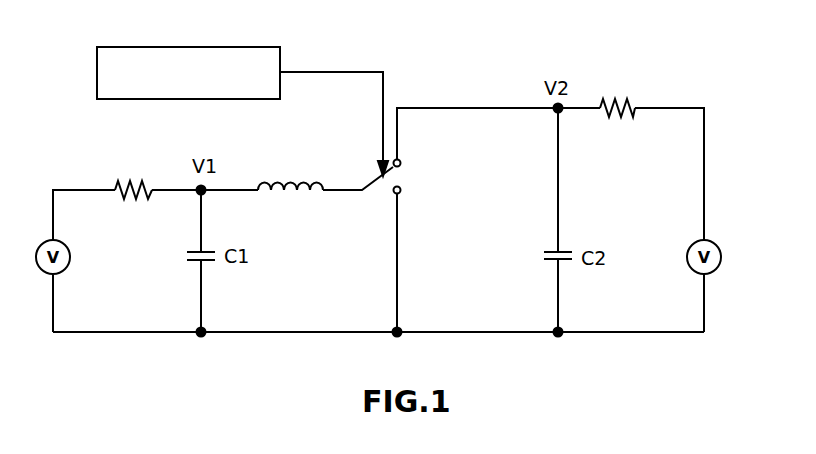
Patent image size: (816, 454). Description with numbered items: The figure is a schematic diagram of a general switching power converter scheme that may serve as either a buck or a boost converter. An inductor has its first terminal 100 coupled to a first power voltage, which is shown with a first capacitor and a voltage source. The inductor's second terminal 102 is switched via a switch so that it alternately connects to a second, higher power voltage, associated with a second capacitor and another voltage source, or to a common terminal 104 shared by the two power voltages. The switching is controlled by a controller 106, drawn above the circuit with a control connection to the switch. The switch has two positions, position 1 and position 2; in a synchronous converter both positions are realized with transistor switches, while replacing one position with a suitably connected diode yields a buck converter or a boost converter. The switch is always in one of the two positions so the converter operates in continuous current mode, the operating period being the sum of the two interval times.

The first terminal 100 is at (230, 191).
The second terminal 102 is at (355, 192).
The common terminal 104 is at (402, 337).
The controller 106 is at (130, 47).
The switch position 1 is at (408, 190).
The switch position 2 is at (407, 162).